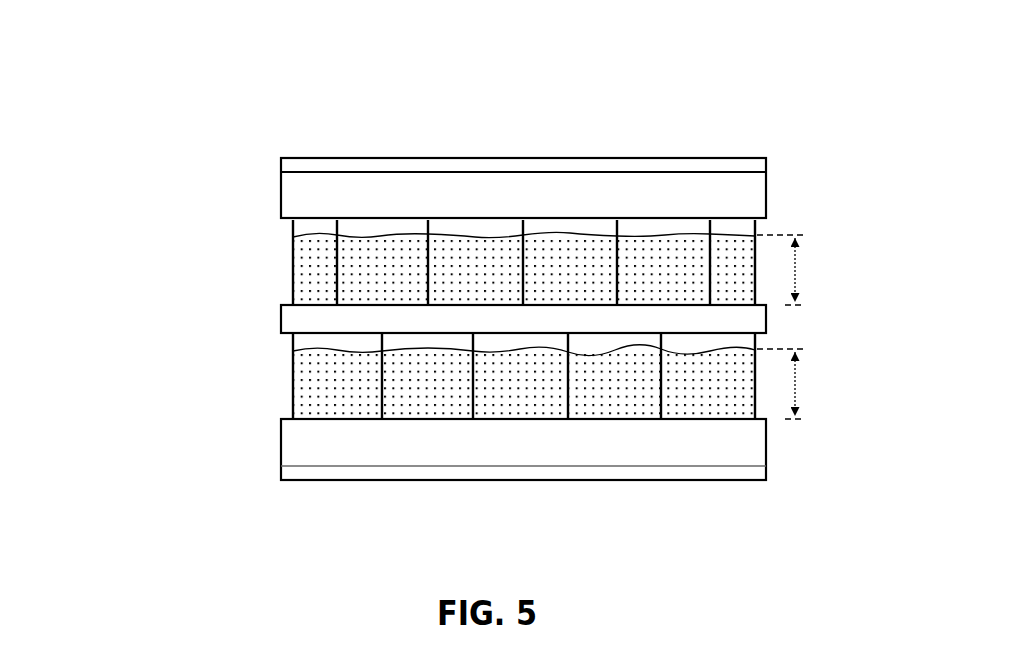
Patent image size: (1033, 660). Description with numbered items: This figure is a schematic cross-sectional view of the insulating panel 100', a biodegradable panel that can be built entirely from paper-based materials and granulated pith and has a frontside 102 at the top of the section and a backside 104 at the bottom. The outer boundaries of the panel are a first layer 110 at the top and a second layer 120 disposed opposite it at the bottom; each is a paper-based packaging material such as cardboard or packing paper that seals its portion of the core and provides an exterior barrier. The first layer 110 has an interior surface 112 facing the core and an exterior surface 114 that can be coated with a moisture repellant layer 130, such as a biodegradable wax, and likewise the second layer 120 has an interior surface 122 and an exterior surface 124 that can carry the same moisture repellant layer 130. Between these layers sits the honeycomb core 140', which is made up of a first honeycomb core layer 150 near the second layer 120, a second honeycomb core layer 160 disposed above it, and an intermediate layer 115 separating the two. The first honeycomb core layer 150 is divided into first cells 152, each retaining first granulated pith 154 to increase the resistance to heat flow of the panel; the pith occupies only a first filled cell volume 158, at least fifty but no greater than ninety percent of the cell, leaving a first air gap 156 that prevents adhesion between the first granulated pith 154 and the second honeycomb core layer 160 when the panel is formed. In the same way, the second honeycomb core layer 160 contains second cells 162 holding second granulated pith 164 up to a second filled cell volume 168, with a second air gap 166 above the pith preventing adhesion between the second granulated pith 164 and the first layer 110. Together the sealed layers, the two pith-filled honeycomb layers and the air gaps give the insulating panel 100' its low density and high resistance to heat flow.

The insulating panel 100' is at (581, 243).
The frontside 102 is at (687, 139).
The backside 104 is at (684, 492).
The first layer 110 is at (740, 193).
The interior surface 112 is at (281, 218).
The exterior surface 114 is at (281, 172).
The intermediate layer 115 is at (768, 315).
The second layer 120 is at (740, 440).
The interior surface 122 is at (281, 420).
The exterior surface 124 is at (281, 467).
The moisture repellant layer 130 is at (303, 167).
The honeycomb core 140' is at (404, 319).
The first honeycomb core layer 150 is at (276, 378).
The first cells 152 is at (580, 428).
The first granulated pith 154 is at (543, 382).
The first air gap 156 is at (498, 338).
The first filled cell volume 158 is at (801, 384).
The second honeycomb core layer 160 is at (274, 250).
The second cells 162 is at (414, 217).
The second granulated pith 164 is at (495, 290).
The second air gap 166 is at (450, 235).
The second filled cell volume 168 is at (801, 270).